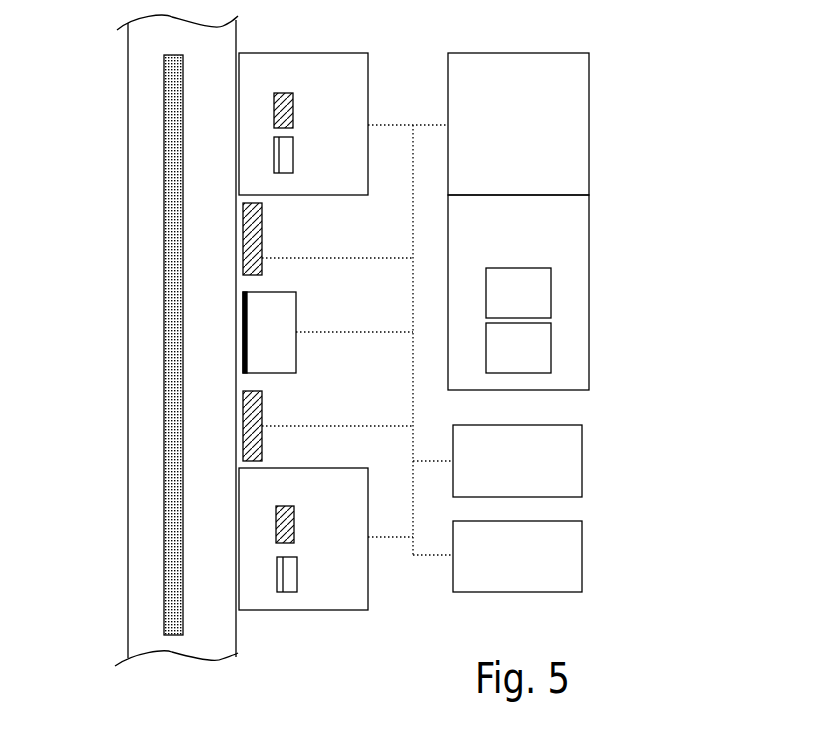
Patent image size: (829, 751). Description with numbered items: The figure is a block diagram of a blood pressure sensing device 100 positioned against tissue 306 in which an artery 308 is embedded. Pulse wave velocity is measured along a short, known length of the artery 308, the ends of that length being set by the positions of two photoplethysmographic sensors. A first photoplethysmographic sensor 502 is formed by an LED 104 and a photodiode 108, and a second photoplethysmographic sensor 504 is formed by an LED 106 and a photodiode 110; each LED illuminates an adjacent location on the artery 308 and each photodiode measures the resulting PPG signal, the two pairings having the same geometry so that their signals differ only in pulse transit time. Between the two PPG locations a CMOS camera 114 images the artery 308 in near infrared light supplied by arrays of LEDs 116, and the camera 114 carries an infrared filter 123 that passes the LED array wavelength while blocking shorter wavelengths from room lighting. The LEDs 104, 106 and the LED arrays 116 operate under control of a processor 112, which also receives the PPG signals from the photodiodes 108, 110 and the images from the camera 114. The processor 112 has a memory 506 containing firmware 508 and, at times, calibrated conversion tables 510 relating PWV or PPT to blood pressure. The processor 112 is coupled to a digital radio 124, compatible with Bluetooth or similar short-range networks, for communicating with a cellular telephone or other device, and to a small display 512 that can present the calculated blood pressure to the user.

The BP sensing device 100 is at (633, 53).
The LED 104 is at (273, 110).
The LED 106 is at (273, 528).
The photodiode 108 is at (273, 155).
The photodiode 110 is at (273, 570).
The processor 112 is at (539, 136).
The CMOS camera 114 is at (268, 333).
The arrays of LEDs 116 is at (263, 239).
The infrared filter 123 is at (243, 334).
The digital radio 124 is at (553, 463).
The tissue 306 is at (229, 290).
The artery 308 is at (167, 159).
The first photoplethysmographic sensor 502 is at (356, 136).
The second photoplethysmographic sensor 504 is at (356, 551).
The memory 506 is at (539, 247).
The firmware 508 is at (539, 306).
The conversion tables 510 is at (539, 361).
The display 512 is at (537, 569).